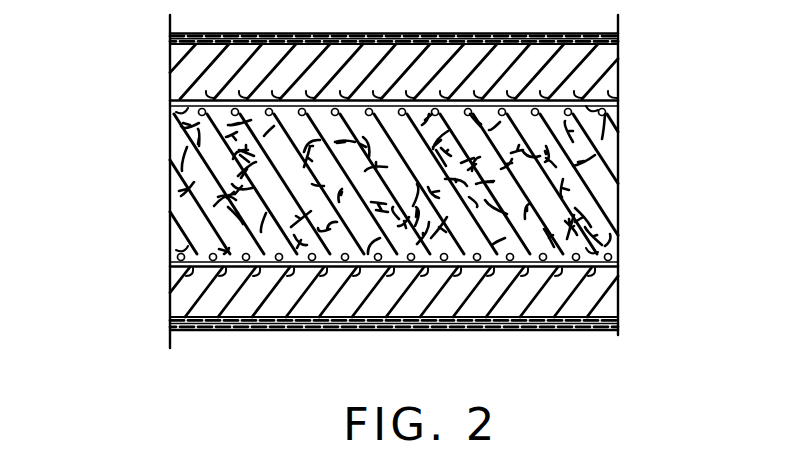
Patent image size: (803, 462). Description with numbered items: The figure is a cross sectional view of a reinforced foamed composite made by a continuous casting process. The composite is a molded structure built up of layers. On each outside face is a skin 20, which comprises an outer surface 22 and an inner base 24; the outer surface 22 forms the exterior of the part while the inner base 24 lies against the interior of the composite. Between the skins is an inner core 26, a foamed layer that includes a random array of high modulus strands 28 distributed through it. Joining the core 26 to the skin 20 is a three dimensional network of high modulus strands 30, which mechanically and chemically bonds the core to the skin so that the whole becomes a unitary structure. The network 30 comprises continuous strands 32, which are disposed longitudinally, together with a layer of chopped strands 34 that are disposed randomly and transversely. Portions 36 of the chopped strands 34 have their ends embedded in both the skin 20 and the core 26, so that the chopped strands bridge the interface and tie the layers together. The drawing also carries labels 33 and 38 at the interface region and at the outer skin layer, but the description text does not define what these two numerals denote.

The skin 20 is at (183, 72).
The outer surface 22 is at (383, 35).
The inner base 24 is at (605, 62).
The inner core 26 is at (160, 165).
The high modulus strands 28 is at (177, 212).
The three dimensional network of high modulus strands 30 is at (158, 107).
The continuous strands 32 is at (172, 263).
The entangled fibers 33 is at (175, 122).
The chopped strands 34 is at (172, 250).
The portions of the strands 36 is at (485, 98).
The outer surface skin 38 is at (240, 33).